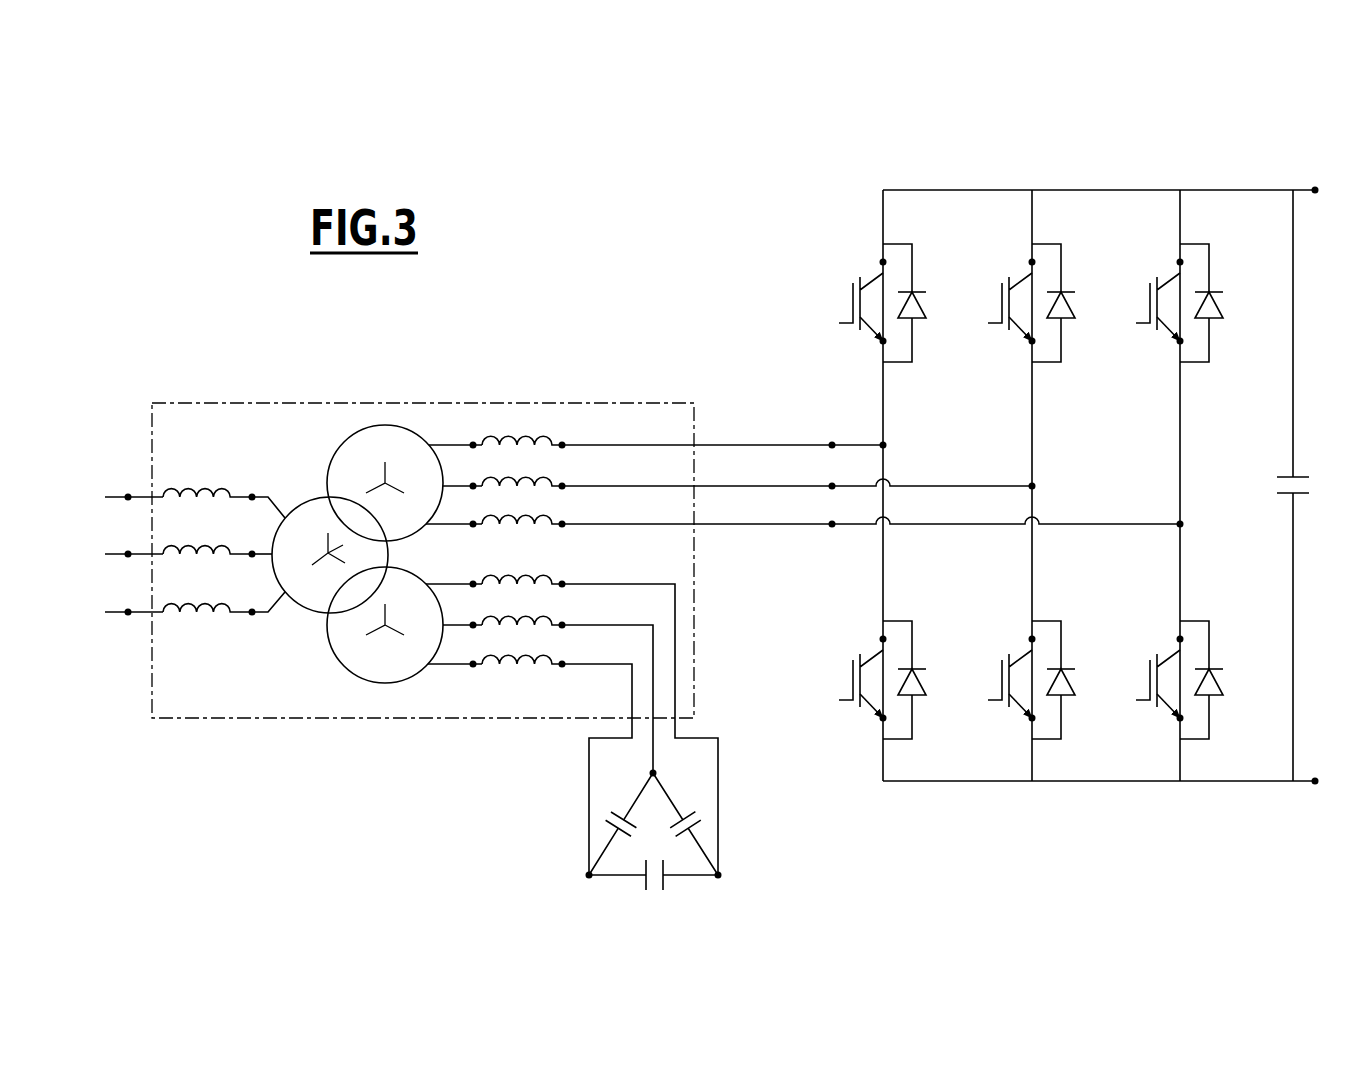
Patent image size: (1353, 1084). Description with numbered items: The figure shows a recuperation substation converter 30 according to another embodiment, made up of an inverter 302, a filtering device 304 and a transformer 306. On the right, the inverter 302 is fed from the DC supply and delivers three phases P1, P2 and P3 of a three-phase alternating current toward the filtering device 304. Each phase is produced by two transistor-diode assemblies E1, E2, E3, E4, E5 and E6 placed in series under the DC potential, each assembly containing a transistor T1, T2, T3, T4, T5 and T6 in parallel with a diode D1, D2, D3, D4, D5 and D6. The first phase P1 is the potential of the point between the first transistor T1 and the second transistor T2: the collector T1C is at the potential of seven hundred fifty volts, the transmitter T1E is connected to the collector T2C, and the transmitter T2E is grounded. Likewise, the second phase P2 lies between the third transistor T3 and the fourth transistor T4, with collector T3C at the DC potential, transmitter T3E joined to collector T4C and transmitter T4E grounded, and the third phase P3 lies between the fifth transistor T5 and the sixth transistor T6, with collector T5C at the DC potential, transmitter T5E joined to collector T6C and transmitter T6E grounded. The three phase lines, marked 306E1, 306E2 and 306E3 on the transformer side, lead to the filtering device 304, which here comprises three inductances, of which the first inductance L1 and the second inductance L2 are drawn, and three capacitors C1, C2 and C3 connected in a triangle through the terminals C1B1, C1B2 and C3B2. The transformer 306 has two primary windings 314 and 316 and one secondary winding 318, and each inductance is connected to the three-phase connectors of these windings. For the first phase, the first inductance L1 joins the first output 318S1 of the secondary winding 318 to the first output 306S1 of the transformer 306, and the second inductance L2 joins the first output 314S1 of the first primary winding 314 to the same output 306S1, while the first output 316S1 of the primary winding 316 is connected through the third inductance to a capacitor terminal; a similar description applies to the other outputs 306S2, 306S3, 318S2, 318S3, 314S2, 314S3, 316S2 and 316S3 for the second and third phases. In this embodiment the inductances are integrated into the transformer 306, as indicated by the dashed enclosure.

The transformer 306 is at (258, 387).
The first output of the transformer 306S1 is at (127, 492).
The second input terminal 306S2 is at (125, 550).
The third input terminal 306S3 is at (127, 614).
The first inductance L1 is at (207, 534).
The first output of the secondary winding 318S1 is at (252, 496).
The second terminal of winding 318 318S2 is at (252, 553).
The third terminal of winding 318 318S3 is at (253, 614).
The secondary winding 318 is at (305, 597).
The first primary winding 314 is at (390, 432).
The primary winding 316 is at (385, 677).
The first output of the first primary winding 314S1 is at (473, 445).
The second terminal of winding 314 314S2 is at (475, 488).
The third terminal of winding 314 314S3 is at (473, 527).
The first output of the primary winding 316S1 is at (517, 580).
The second terminal of winding 316 316S2 is at (475, 627).
The third terminal of winding 316 316S3 is at (473, 665).
The filtering device 304 is at (656, 605).
The second inductance L2 is at (540, 428).
The first capacitor C1 is at (621, 823).
The second capacitor C2 is at (685, 823).
The third capacitor C3 is at (653, 894).
The second terminal of the first capacitor C1B2 is at (653, 773).
The first terminal of the first capacitor C1B1 is at (589, 875).
The second terminal of the third capacitor C3B2 is at (718, 875).
The first output line of transformer 306E1 is at (832, 446).
The second output line of transformer 306E2 is at (832, 486).
The third output line of transformer 306E3 is at (832, 524).
The inverter 302 is at (1108, 175).
The first phase P1 is at (884, 446).
The second phase P2 is at (1032, 486).
The third phase P3 is at (1180, 524).
The first transistor T1 is at (838, 290).
The second transistor T2 is at (828, 712).
The third transistor T3 is at (995, 338).
The fourth transistor T4 is at (983, 672).
The fifth transistor T5 is at (1160, 342).
The sixth transistor T6 is at (1230, 640).
The collector of the first transistor T1C is at (881, 262).
The collector of the second transistor T2C is at (881, 639).
The collector of the third transistor T3C is at (1030, 262).
The collector of the fourth transistor T4C is at (1030, 639).
The collector of the fifth transistor T5C is at (1178, 262).
The collector of the sixth transistor T6C is at (1178, 639).
The transmitter of the first transistor T1E is at (884, 341).
The transmitter of the second transistor T2E is at (883, 717).
The transmitter of the third transistor T3E is at (1033, 341).
The transmitter of the fourth transistor T4E is at (1032, 717).
The transmitter of the fifth transistor T5E is at (1181, 341).
The transmitter of the sixth transistor T6E is at (1180, 717).
The first diode D1 is at (920, 305).
The second diode D2 is at (918, 700).
The third diode D3 is at (1069, 305).
The fourth diode D4 is at (1067, 700).
The fifth diode D5 is at (1217, 305).
The sixth diode D6 is at (1215, 700).
The transistor-diode assembly E1 is at (896, 250).
The transistor-diode assembly E2 is at (905, 722).
The transistor-diode assembly E3 is at (1045, 250).
The transistor-diode assembly E4 is at (1054, 722).
The transistor-diode assembly E5 is at (1193, 250).
The transistor-diode assembly E6 is at (1202, 722).
The converter 30 is at (1275, 150).